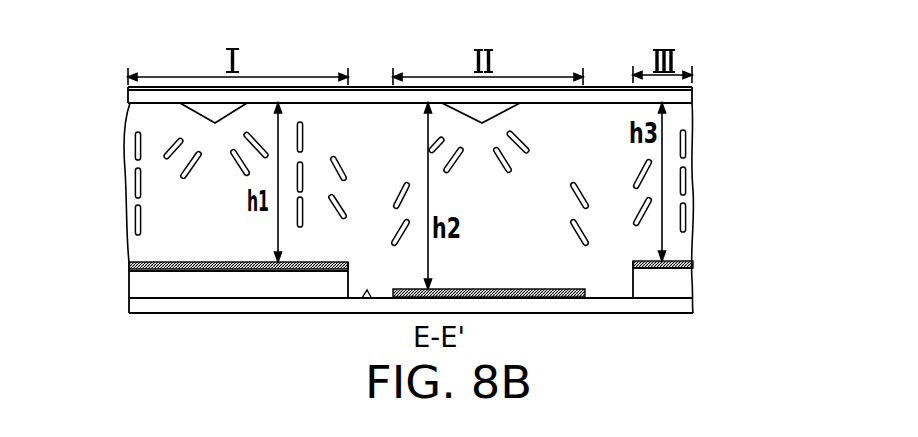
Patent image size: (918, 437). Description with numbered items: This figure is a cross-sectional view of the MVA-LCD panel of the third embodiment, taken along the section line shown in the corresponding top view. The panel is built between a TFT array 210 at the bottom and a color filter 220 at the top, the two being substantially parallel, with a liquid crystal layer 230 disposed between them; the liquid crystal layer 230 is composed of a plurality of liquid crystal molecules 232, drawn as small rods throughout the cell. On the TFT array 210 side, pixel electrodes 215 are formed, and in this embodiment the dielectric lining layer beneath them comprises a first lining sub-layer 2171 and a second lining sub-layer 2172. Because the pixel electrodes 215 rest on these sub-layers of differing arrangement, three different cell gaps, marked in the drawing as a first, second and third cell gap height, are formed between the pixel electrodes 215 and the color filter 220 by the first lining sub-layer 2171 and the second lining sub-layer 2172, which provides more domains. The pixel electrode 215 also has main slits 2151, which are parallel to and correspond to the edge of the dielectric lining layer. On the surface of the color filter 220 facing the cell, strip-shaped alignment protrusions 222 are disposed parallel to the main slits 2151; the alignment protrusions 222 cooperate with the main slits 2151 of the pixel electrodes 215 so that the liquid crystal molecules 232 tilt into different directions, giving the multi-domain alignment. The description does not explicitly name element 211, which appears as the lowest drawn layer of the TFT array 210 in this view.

The TFT array 210 is at (442, 296).
The substrate 211 is at (684, 305).
The pixel electrode 215 is at (130, 263).
The main slit 2151 is at (367, 292).
The first lining sub-layer 2171 is at (137, 292).
The second lining sub-layer 2172 is at (682, 292).
The color filter 220 is at (690, 89).
The alignment protrusion 222 is at (483, 105).
The liquid crystal layer 230 is at (692, 98).
The liquid crystal molecule 232 is at (689, 112).